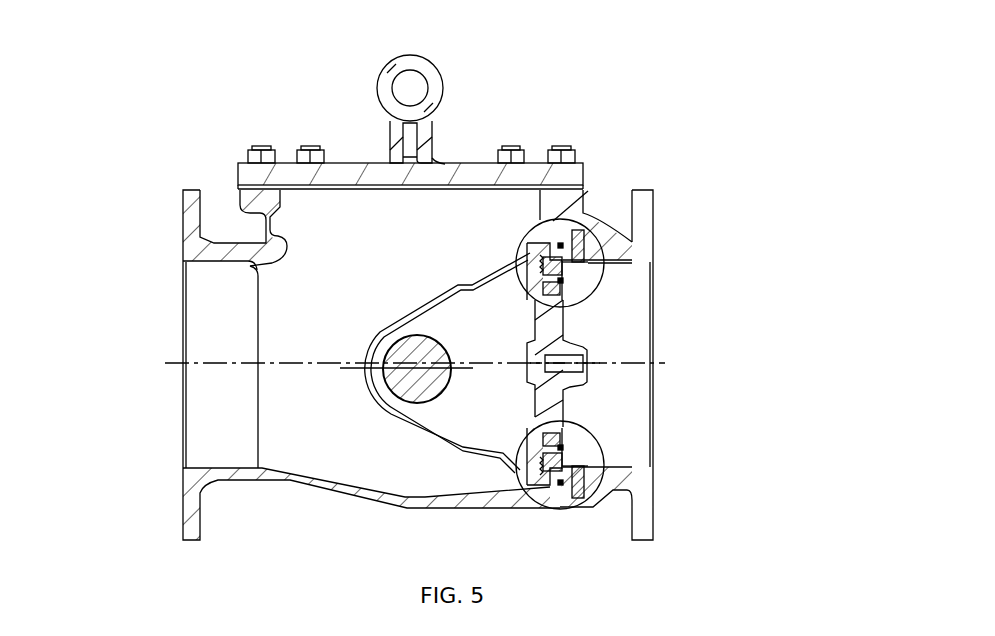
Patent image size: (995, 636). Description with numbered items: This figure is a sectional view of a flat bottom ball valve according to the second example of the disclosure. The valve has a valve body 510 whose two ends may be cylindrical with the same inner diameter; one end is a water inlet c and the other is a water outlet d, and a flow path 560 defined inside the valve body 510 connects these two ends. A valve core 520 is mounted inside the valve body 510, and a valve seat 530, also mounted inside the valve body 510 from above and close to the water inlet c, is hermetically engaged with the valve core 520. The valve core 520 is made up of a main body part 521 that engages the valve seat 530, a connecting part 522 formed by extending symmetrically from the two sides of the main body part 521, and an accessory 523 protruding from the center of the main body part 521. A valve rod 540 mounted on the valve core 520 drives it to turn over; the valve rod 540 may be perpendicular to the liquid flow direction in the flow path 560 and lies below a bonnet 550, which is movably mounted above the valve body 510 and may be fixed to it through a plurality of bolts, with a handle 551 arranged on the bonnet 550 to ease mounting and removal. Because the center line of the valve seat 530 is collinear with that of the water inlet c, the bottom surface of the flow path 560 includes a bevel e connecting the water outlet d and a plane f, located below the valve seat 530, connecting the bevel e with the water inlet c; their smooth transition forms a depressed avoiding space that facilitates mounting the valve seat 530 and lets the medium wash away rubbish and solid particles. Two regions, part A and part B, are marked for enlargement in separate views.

The valve body 510 is at (461, 309).
The valve core 520 is at (675, 347).
The main body part 521 is at (548, 282).
The connecting part 522 is at (487, 337).
The accessory 523 is at (586, 355).
The valve seat 530 is at (553, 257).
The valve rod 540 is at (407, 385).
The bonnet 550 is at (372, 165).
The handle 551 is at (380, 100).
The flow path 560 is at (380, 265).
The part A is at (560, 460).
The part B is at (527, 233).
The water inlet c is at (575, 420).
The water outlet d is at (215, 390).
The bevel e is at (335, 479).
The plane f is at (560, 483).